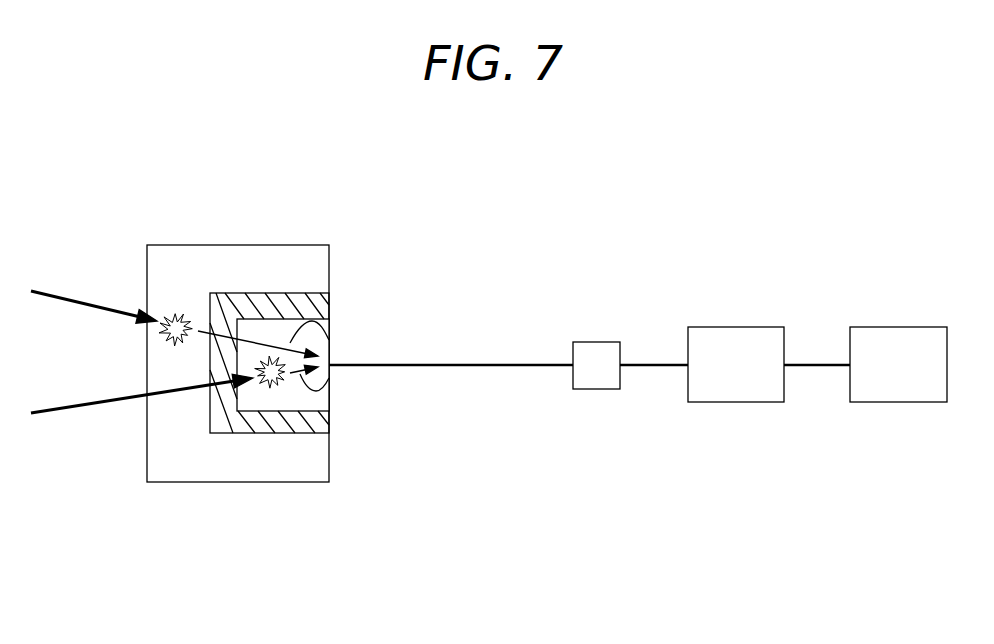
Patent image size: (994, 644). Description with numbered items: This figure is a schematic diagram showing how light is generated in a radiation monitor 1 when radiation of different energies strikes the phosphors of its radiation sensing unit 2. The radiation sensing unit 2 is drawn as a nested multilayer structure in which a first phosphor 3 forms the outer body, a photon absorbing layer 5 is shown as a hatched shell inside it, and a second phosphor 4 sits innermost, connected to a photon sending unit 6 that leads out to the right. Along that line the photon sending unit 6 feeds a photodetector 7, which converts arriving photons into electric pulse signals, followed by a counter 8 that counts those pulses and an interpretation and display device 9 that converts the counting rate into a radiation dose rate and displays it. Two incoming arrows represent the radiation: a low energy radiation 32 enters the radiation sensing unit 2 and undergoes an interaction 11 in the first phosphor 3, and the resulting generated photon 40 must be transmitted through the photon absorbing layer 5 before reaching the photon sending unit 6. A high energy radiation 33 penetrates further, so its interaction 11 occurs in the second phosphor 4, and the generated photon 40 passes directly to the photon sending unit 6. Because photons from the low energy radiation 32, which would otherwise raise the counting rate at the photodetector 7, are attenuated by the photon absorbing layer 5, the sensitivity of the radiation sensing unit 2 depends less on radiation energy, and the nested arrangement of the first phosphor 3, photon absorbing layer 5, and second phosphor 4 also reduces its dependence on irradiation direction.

The radiation monitor 1 is at (453, 236).
The radiation sensing unit 2 is at (157, 244).
The first phosphor 3 is at (172, 460).
The second phosphor 4 is at (322, 402).
The photon absorbing layer 5 is at (286, 292).
The photon sending unit 6 is at (458, 364).
The photodetector 7 is at (592, 362).
The counter 8 is at (723, 343).
The interpretation and display device 9 is at (895, 345).
The interaction 11 is at (177, 315).
The low energy radiation 32 is at (48, 292).
The high energy radiation 33 is at (56, 414).
The generated photon 40 is at (329, 340).